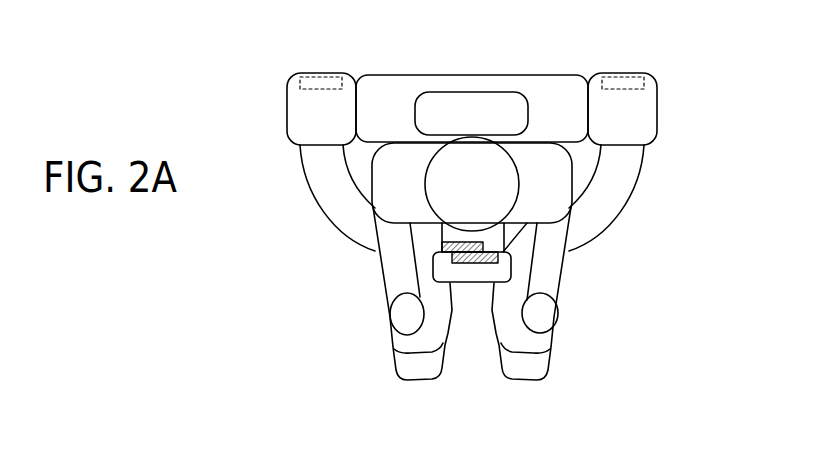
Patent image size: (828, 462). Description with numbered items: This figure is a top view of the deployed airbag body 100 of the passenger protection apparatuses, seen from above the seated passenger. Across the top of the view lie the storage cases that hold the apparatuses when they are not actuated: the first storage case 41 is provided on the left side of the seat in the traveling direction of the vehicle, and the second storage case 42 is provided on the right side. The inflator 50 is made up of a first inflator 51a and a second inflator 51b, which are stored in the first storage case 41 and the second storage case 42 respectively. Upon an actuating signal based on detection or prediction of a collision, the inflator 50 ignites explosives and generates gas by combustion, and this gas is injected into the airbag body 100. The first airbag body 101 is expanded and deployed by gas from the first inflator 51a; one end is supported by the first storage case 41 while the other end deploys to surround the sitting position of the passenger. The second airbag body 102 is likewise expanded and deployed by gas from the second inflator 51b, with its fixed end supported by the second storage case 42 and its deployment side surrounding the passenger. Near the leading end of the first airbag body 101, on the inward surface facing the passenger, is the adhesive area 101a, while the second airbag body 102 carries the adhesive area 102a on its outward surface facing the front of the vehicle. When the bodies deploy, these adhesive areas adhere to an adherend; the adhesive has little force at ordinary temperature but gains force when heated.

The first storage case 41 is at (644, 108).
The second storage case 42 is at (300, 108).
The inflator 50 is at (472, 46).
The first inflator 51a is at (613, 73).
The second inflator 51b is at (331, 73).
The airbag body 100 is at (472, 232).
The first airbag body 101 is at (495, 269).
The adhesive area 101a is at (434, 275).
The second airbag body 102 is at (358, 231).
The adhesive area 102a is at (484, 243).